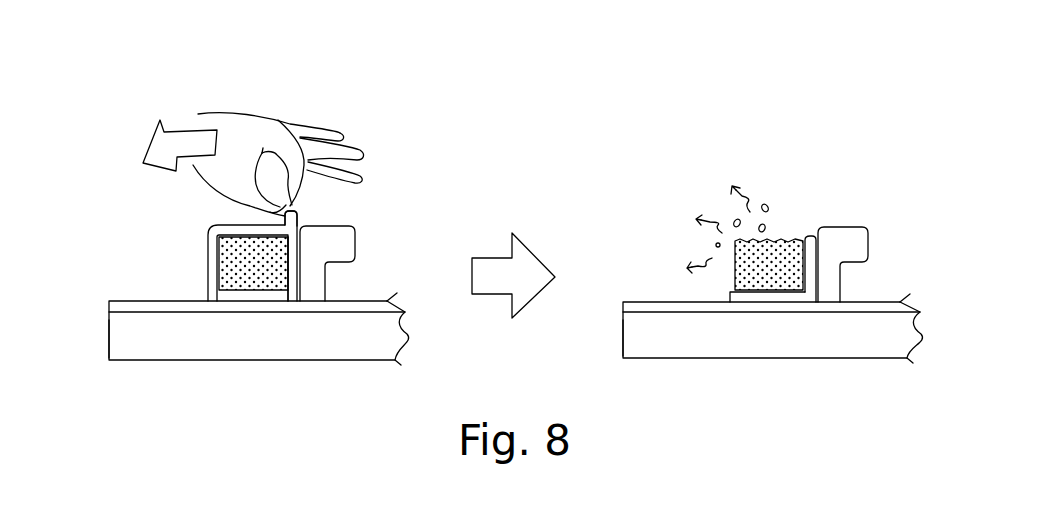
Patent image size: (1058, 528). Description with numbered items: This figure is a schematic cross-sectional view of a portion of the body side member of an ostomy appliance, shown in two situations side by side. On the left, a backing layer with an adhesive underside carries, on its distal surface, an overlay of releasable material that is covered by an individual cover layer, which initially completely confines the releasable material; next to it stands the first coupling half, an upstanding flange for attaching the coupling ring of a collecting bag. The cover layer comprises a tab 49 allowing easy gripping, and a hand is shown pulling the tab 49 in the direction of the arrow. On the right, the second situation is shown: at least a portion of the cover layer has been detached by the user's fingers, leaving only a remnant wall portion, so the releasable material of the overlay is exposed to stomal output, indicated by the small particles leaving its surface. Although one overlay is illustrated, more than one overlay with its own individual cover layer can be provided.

The tab 49 is at (298, 217).